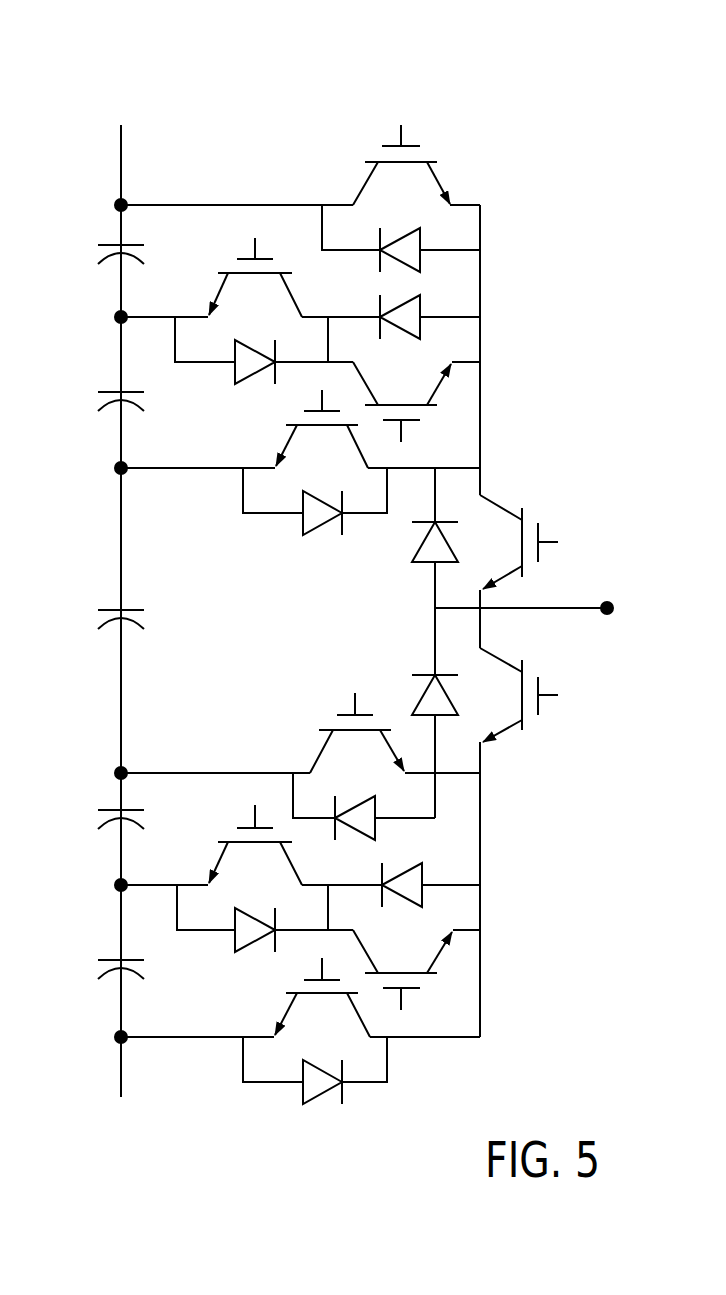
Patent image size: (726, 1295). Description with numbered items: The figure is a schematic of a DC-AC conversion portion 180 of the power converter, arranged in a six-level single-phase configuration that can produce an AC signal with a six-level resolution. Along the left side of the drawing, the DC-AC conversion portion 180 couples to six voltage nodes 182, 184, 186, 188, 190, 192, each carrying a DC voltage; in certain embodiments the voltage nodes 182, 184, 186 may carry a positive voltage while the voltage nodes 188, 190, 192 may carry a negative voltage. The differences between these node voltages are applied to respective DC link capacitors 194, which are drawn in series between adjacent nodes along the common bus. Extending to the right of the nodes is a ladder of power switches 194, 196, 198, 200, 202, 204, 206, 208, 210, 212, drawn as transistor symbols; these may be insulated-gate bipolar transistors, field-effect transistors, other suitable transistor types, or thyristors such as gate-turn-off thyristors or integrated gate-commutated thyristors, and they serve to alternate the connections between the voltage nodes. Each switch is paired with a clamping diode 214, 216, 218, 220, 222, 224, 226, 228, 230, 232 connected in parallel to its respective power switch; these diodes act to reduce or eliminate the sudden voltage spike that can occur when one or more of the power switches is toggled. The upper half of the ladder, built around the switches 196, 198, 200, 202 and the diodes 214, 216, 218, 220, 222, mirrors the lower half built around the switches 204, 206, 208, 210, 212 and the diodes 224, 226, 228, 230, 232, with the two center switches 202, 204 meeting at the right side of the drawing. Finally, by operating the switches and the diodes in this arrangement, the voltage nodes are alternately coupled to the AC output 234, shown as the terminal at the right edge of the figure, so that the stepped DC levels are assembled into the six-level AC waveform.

The DC-AC conversion portion 180 is at (522, 42).
The voltage node 182 is at (118, 200).
The voltage node 184 is at (118, 313).
The voltage node 186 is at (118, 465).
The voltage node 188 is at (118, 770).
The voltage node 190 is at (118, 882).
The voltage node 192 is at (118, 1034).
The DC link capacitor 194 is at (110, 243).
The power switch 196 is at (205, 312).
The power switch 198 is at (442, 393).
The power switch 200 is at (276, 462).
The power switch 202 is at (503, 507).
The power switch 204 is at (507, 732).
The power switch 206 is at (315, 752).
The power switch 208 is at (205, 880).
The power switch 210 is at (442, 960).
The power switch 212 is at (276, 1030).
The clamping diode 214 is at (424, 238).
The clamping diode 216 is at (235, 371).
The clamping diode 218 is at (424, 305).
The clamping diode 220 is at (322, 527).
The clamping diode 222 is at (420, 565).
The clamping diode 224 is at (420, 697).
The clamping diode 226 is at (378, 830).
The clamping diode 228 is at (235, 939).
The clamping diode 230 is at (424, 895).
The clamping diode 232 is at (332, 1105).
The AC output 234 is at (612, 603).